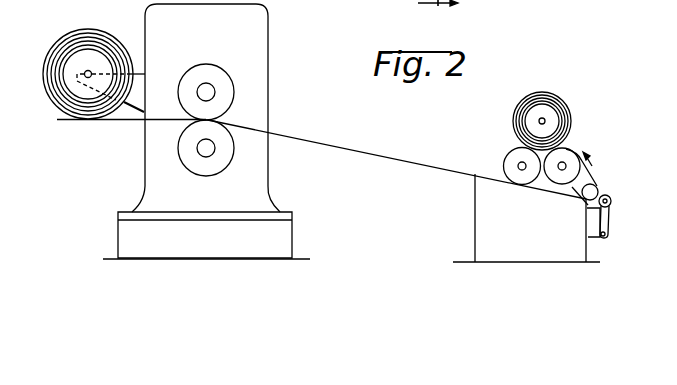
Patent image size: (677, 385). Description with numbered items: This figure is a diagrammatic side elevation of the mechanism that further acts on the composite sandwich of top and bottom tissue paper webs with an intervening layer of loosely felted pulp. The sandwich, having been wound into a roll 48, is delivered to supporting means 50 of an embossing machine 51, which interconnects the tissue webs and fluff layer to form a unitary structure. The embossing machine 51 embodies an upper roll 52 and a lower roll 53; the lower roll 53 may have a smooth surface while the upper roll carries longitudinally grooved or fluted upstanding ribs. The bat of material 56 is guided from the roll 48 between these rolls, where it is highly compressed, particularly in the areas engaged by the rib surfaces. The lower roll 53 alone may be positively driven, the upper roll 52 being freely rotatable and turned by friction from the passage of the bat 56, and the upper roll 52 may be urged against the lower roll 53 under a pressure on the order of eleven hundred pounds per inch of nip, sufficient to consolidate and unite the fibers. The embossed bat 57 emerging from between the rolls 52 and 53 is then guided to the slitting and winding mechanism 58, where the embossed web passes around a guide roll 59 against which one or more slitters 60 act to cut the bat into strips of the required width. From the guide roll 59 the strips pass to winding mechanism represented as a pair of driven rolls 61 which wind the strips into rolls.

The roll 48 is at (88, 30).
The supporting means 50 is at (124, 111).
The embossing machine 51 is at (148, 181).
The upper roll 52 is at (259, 73).
The lower roll 53 is at (233, 153).
The bat of material 56 is at (158, 121).
The embossed bat 57 is at (300, 141).
The slitting and winding mechanism 58 is at (475, 212).
The guide roll 59 is at (594, 189).
The slitter 60 is at (612, 205).
The driven rolls 61 is at (513, 156).